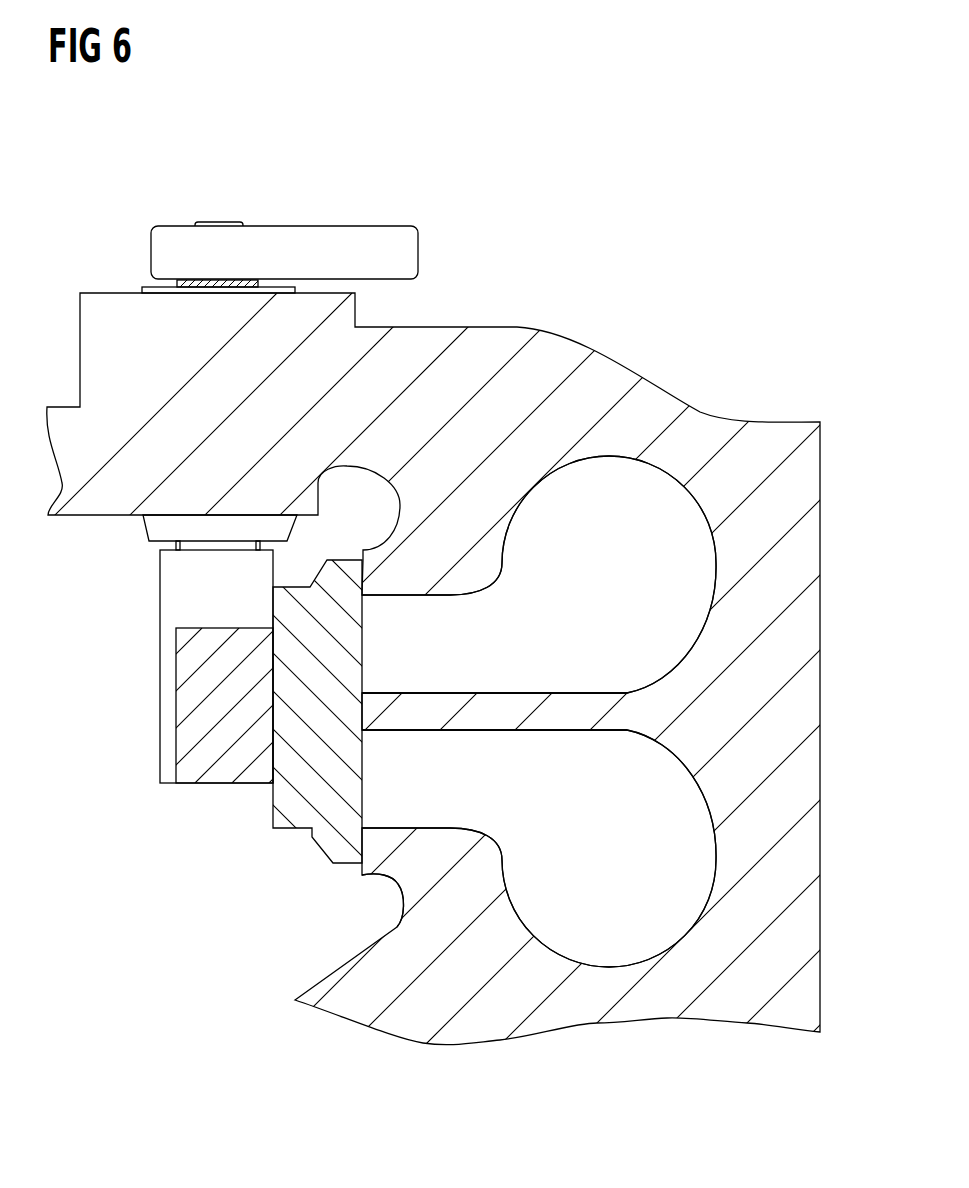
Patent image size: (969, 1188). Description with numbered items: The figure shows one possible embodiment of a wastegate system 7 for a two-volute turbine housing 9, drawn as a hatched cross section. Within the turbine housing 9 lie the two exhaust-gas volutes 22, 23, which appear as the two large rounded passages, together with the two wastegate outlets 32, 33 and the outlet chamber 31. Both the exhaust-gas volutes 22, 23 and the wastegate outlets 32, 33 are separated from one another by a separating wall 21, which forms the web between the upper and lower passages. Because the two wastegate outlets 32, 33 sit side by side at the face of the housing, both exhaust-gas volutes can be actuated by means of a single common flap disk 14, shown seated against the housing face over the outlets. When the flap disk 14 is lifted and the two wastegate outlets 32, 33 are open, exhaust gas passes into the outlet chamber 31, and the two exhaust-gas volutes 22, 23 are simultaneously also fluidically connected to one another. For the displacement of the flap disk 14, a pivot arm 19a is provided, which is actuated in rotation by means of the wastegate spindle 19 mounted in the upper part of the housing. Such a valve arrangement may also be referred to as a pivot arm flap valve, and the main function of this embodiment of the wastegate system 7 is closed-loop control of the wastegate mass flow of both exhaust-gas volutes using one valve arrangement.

The wastegate system 7 is at (148, 693).
The two-volute turbine housing 9 is at (807, 703).
The flap disk 14 is at (306, 785).
The wastegate spindle 19 is at (152, 543).
The pivot arm 19a is at (183, 617).
The separating wall 21 is at (570, 713).
The exhaust-gas volute 22 is at (612, 578).
The exhaust-gas volute 23 is at (613, 875).
The outlet chamber 31 is at (352, 930).
The wastegate outlet 32 is at (427, 660).
The wastegate outlet 33 is at (427, 801).